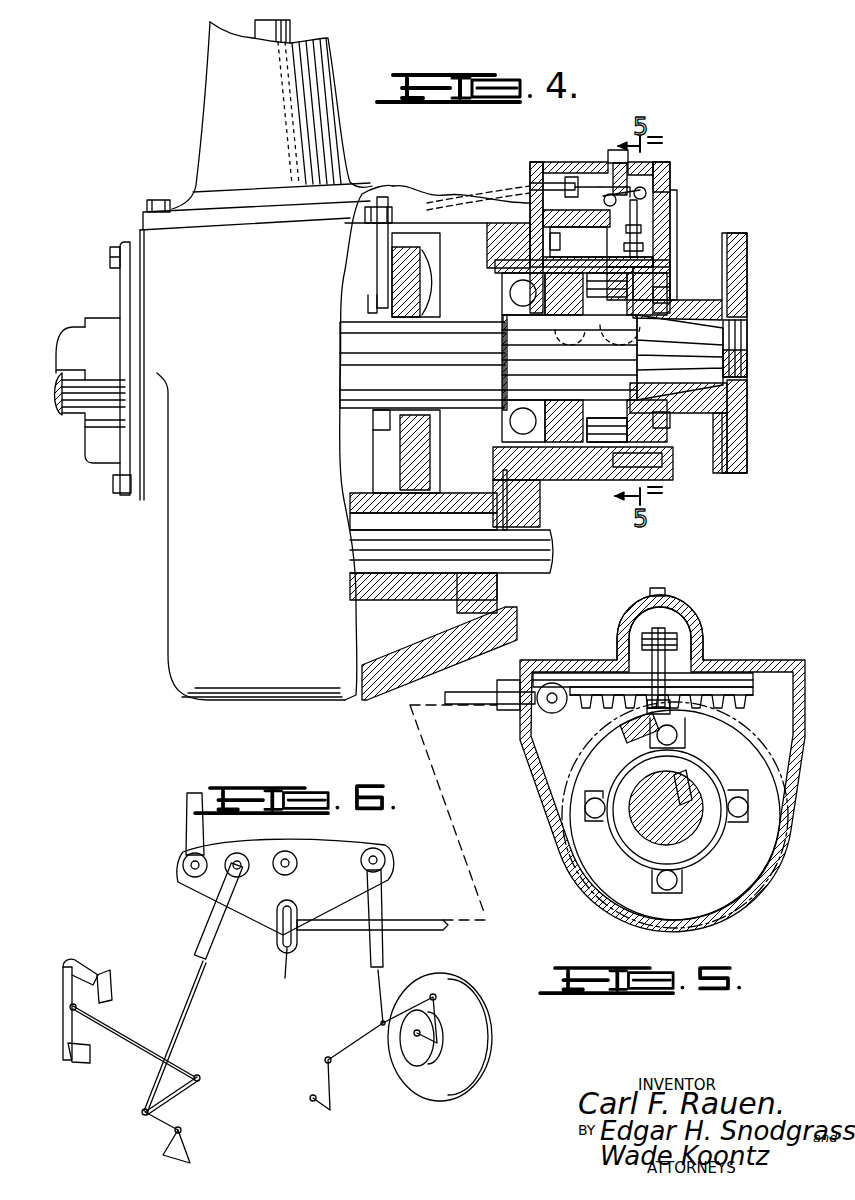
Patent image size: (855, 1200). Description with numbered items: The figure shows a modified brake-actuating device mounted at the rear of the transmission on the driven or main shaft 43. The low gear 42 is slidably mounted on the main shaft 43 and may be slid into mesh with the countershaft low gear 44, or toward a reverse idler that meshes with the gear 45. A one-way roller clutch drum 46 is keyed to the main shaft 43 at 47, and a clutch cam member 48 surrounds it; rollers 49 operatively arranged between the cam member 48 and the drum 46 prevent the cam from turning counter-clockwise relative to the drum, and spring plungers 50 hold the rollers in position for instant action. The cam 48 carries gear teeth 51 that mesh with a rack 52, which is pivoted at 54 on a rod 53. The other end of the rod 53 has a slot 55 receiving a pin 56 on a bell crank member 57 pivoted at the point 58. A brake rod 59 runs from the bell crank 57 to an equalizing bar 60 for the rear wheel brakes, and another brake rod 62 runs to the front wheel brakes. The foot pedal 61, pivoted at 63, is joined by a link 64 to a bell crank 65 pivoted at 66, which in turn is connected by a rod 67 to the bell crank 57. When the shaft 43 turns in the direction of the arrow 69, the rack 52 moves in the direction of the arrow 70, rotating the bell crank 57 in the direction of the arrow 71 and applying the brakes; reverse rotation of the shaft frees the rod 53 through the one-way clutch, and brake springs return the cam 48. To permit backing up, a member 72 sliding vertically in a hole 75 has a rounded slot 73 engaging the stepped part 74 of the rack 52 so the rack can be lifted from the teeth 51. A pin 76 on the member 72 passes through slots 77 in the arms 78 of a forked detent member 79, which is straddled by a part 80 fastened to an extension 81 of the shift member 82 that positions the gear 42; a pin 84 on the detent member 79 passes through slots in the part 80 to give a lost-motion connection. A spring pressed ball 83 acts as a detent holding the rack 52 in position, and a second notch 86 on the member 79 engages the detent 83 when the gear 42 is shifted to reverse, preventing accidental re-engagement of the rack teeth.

In FIG. 4, the low gear 42 is at (392, 447).
In FIG. 4, the main shaft 43 is at (745, 345).
In FIG. 5, the main shaft 43 is at (651, 840).
In FIG. 4, the countershaft low gear 44 is at (386, 612).
In FIG. 4, the gear 45 is at (462, 600).
In FIG. 4, the one-way roller clutch drum 46 is at (680, 357).
In FIG. 5, the one-way roller clutch drum 46 is at (705, 842).
In FIG. 4, the key 47 is at (571, 357).
In FIG. 4, the clutch cam member 48 is at (605, 470).
In FIG. 5, the clutch cam member 48 is at (720, 880).
In FIG. 4, the rollers 49 is at (590, 418).
In FIG. 5, the rollers 49 is at (739, 797).
In FIG. 5, the spring plungers 50 is at (634, 737).
In FIG. 4, the gear teeth 51 is at (672, 460).
In FIG. 5, the gear teeth 51 is at (678, 748).
In FIG. 4, the rack 52 is at (640, 278).
In FIG. 5, the rack 52 is at (753, 690).
In FIG. 5, the rod 53 is at (468, 706).
In FIG. 5, the pivot 54 is at (550, 692).
In FIG. 6, the slot 55 is at (286, 960).
In FIG. 6, the pin 56 is at (284, 942).
In FIG. 6, the bell crank member 57 is at (355, 852).
In FIG. 6, the pivot point 58 is at (285, 860).
In FIG. 6, the brake rod 59 is at (382, 900).
In FIG. 6, the equalizing bar 60 is at (360, 1047).
In FIG. 6, the foot pedal 61 is at (101, 980).
In FIG. 6, the brake rod 62 is at (187, 828).
In FIG. 6, the pivot 63 is at (75, 1060).
In FIG. 6, the link 64 is at (108, 1036).
In FIG. 6, the bell crank 65 is at (190, 1094).
In FIG. 6, the pivot 66 is at (190, 1135).
In FIG. 6, the rod 67 is at (185, 1026).
In FIG. 5, the arrow 69 is at (692, 775).
In FIG. 5, the arrow 70 is at (728, 660).
In FIG. 6, the arrow 71 is at (270, 870).
In FIG. 4, the member 72 is at (637, 228).
In FIG. 5, the member 72 is at (670, 700).
In FIG. 4, the slot 73 is at (640, 242).
In FIG. 5, the slot 73 is at (672, 710).
In FIG. 4, the stepped part 74 is at (640, 258).
In FIG. 5, the hole 75 is at (666, 632).
In FIG. 4, the pin 76 is at (638, 210).
In FIG. 5, the pin 76 is at (633, 640).
In FIG. 4, the slots 77 is at (645, 190).
In FIG. 4, the arms 78 is at (647, 195).
In FIG. 5, the arms 78 is at (652, 633).
In FIG. 4, the forked detent member 79 is at (616, 176).
In FIG. 4, the part 80 is at (538, 200).
In FIG. 5, the part 80 is at (683, 622).
In FIG. 4, the extension 81 is at (548, 190).
In FIG. 4, the shift member 82 is at (382, 205).
In FIG. 4, the spring pressed ball 83 is at (655, 163).
In FIG. 4, the pin 84 is at (578, 242).
In FIG. 4, the second notch 86 is at (578, 190).